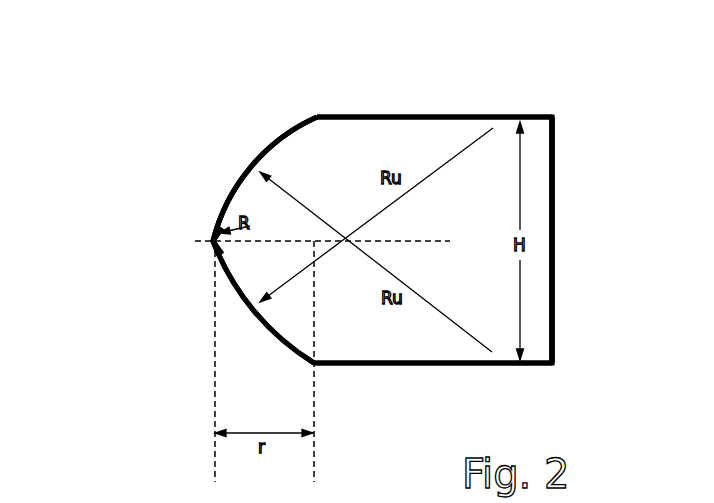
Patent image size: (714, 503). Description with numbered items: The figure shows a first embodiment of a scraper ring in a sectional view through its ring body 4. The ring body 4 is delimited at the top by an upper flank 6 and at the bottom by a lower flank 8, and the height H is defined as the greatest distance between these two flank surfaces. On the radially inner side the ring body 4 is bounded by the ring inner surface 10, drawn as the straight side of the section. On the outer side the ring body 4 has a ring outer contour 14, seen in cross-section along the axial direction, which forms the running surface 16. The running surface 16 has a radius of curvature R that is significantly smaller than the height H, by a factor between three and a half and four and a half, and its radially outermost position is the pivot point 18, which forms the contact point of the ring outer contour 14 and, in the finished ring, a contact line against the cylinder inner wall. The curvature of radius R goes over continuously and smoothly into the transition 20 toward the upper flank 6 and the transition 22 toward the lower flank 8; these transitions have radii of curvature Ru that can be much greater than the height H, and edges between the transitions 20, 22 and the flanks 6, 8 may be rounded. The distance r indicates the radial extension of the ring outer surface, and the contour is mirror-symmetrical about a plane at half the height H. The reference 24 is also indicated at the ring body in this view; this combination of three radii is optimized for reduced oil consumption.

The ring body 4 is at (363, 143).
The upper flank 6 is at (445, 116).
The lower flank 8 is at (415, 363).
The ring inner surface 10 is at (571, 240).
The ring outer contour 14 is at (227, 193).
The running surface 16 is at (108, 223).
The pivot point 18 is at (213, 238).
The transition between the curvature R and the upper flank 20 is at (277, 148).
The transition between the curvature R and the lower flank 22 is at (278, 338).
The rear wall 24 is at (525, 90).